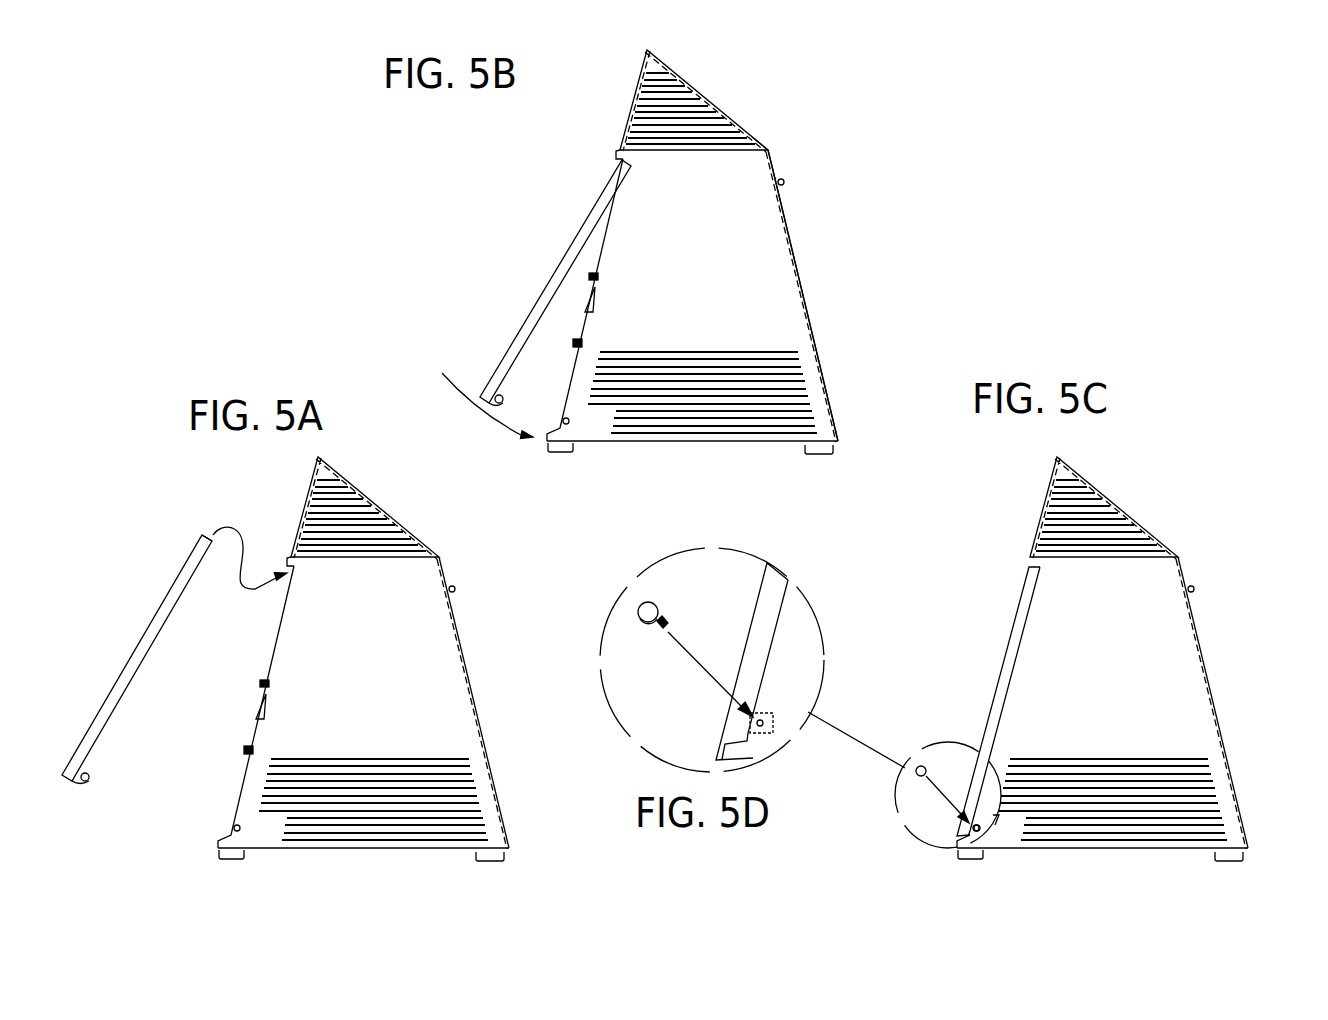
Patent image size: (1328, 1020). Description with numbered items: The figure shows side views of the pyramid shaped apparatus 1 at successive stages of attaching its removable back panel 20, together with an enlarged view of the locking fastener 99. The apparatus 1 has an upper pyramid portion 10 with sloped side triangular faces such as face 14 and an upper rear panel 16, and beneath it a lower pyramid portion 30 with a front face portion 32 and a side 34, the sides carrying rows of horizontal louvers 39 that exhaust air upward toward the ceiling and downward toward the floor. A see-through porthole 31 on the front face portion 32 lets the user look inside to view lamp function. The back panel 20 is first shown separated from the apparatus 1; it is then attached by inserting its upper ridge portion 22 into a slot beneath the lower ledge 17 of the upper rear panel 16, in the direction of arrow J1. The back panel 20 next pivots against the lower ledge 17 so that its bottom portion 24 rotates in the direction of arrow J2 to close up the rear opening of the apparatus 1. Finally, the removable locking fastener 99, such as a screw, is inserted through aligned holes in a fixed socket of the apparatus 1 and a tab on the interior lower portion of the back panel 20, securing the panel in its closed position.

In FIG. 5A, the apparatus 1 is at (440, 515).
In FIG. 5B, the upper pyramid portion 10 is at (752, 103).
In FIG. 5C, the upper pyramid portion 10 is at (1223, 502).
In FIG. 5B, the side triangular face 14 is at (763, 143).
In FIG. 5B, the upper rear panel 16 is at (628, 122).
In FIG. 5A, the upper rear panel 16 is at (303, 507).
In FIG. 5C, the upper rear panel 16 is at (1044, 511).
In FIG. 5B, the lower ledge 17 is at (618, 152).
In FIG. 5A, the lower ledge 17 is at (290, 560).
In FIG. 5B, the removable back panel 20 is at (540, 298).
In FIG. 5A, the removable back panel 20 is at (127, 677).
In FIG. 5C, the removable back panel 20 is at (995, 696).
In FIG. 5D, the removable back panel 20 is at (752, 661).
In FIG. 5A, the upper ridge portion 22 is at (210, 537).
In FIG. 5B, the bottom portion of back panel 24 is at (493, 393).
In FIG. 5B, the lower pyramid portion 30 is at (823, 282).
In FIG. 5C, the see-through porthole 31 is at (1199, 588).
In FIG. 5B, the front face portion 32 is at (788, 222).
In FIG. 5C, the front face portion 32 is at (1205, 647).
In FIG. 5B, the side of lower pyramid portion 34 is at (792, 335).
In FIG. 5A, the side of lower pyramid portion 34 is at (477, 710).
In FIG. 5C, the side of lower pyramid portion 34 is at (1208, 732).
In FIG. 5B, the horizontal louvers 39 is at (673, 440).
In FIG. 5A, the horizontal louvers 39 is at (353, 851).
In FIG. 5C, the horizontal louvers 39 is at (1085, 849).
In FIG. 5C, the removable locking fastener 99 is at (904, 780).
In FIG. 5D, the removable locking fastener 99 is at (643, 605).
In FIG. 5A, the arrow J1 is at (250, 575).
In FIG. 5B, the arrow J2 is at (487, 414).